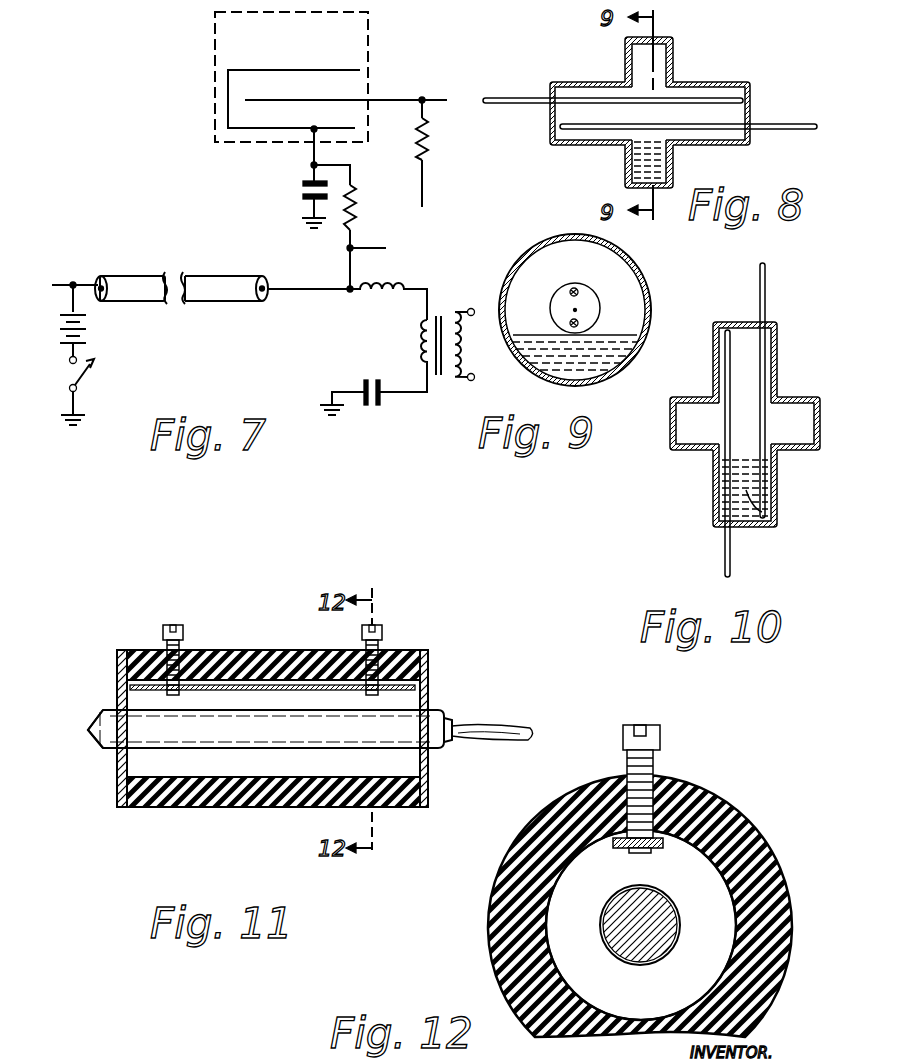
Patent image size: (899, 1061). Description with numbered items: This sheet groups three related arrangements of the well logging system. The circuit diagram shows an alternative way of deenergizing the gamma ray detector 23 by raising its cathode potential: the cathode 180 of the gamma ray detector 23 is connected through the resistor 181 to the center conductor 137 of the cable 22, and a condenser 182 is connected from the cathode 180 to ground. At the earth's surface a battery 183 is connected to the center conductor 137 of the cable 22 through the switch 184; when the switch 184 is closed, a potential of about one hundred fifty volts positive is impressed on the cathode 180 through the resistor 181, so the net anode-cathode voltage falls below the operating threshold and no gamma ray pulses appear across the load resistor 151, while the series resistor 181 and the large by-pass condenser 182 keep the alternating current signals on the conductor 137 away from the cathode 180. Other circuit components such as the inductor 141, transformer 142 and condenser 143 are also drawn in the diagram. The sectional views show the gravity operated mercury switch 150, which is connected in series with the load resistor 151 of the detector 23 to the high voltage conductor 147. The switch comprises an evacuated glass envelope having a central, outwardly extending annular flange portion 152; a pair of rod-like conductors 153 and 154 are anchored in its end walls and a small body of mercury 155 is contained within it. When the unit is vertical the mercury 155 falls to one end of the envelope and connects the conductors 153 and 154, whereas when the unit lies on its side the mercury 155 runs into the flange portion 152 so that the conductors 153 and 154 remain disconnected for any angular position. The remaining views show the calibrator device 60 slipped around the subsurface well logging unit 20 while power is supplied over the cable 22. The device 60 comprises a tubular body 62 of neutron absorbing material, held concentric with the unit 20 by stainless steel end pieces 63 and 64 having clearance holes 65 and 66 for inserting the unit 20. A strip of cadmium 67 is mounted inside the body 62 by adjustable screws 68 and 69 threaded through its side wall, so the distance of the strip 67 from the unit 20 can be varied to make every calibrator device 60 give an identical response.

In FIG. 7, the gamma ray detector 23 is at (331, 77).
In FIG. 7, the cathode 180 is at (291, 133).
In FIG. 7, the resistor 181 is at (358, 210).
In FIG. 7, the condenser 182 is at (303, 199).
In FIG. 7, the load resistor 151 is at (430, 140).
In FIG. 8, the load resistor 151 is at (606, 80).
In FIG. 9, the load resistor 151 is at (562, 294).
In FIG. 10, the load resistor 151 is at (779, 358).
In FIG. 7, the high voltage conductor 147 is at (425, 195).
In FIG. 7, the cable 22 is at (222, 285).
In FIG. 11, the cable 22 is at (488, 730).
In FIG. 7, the center conductor 137 is at (294, 291).
In FIG. 7, the inductor 141 is at (392, 302).
In FIG. 7, the transformer 142 is at (418, 342).
In FIG. 7, the capacitor 143 is at (362, 372).
In FIG. 7, the battery 183 is at (84, 335).
In FIG. 7, the switch 184 is at (90, 385).
In FIG. 8, the mercury switch 150 is at (650, 108).
In FIG. 9, the mercury switch 150 is at (575, 310).
In FIG. 10, the mercury switch 150 is at (728, 420).
In FIG. 8, the flange portion 152 is at (674, 50).
In FIG. 9, the flange portion 152 is at (520, 262).
In FIG. 10, the flange portion 152 is at (724, 439).
In FIG. 8, the rod-like conductor 153 is at (552, 104).
In FIG. 9, the rod-like conductor 153 is at (582, 290).
In FIG. 10, the rod-like conductor 153 is at (733, 548).
In FIG. 8, the rod-like conductor 154 is at (578, 136).
In FIG. 9, the rod-like conductor 154 is at (590, 320).
In FIG. 10, the rod-like conductor 154 is at (767, 294).
In FIG. 8, the mercury 155 is at (625, 168).
In FIG. 9, the mercury 155 is at (630, 358).
In FIG. 10, the mercury 155 is at (752, 490).
In FIG. 11, the calibrator device 60 is at (268, 731).
In FIG. 12, the calibrator device 60 is at (607, 881).
In FIG. 11, the tubular body 62 is at (254, 808).
In FIG. 12, the tubular body 62 is at (490, 900).
In FIG. 11, the end piece 63 is at (116, 690).
In FIG. 11, the end piece 64 is at (432, 700).
In FIG. 12, the end piece 64 is at (555, 932).
In FIG. 11, the clearance hole 65 is at (112, 750).
In FIG. 11, the clearance hole 66 is at (432, 752).
In FIG. 11, the cadmium strip 67 is at (290, 690).
In FIG. 12, the cadmium strip 67 is at (622, 850).
In FIG. 11, the adjustable screw 68 is at (184, 646).
In FIG. 11, the adjustable screw 69 is at (362, 648).
In FIG. 12, the adjustable screw 69 is at (655, 762).
In FIG. 11, the subsurface well logging unit 20 is at (273, 747).
In FIG. 12, the subsurface well logging unit 20 is at (676, 915).